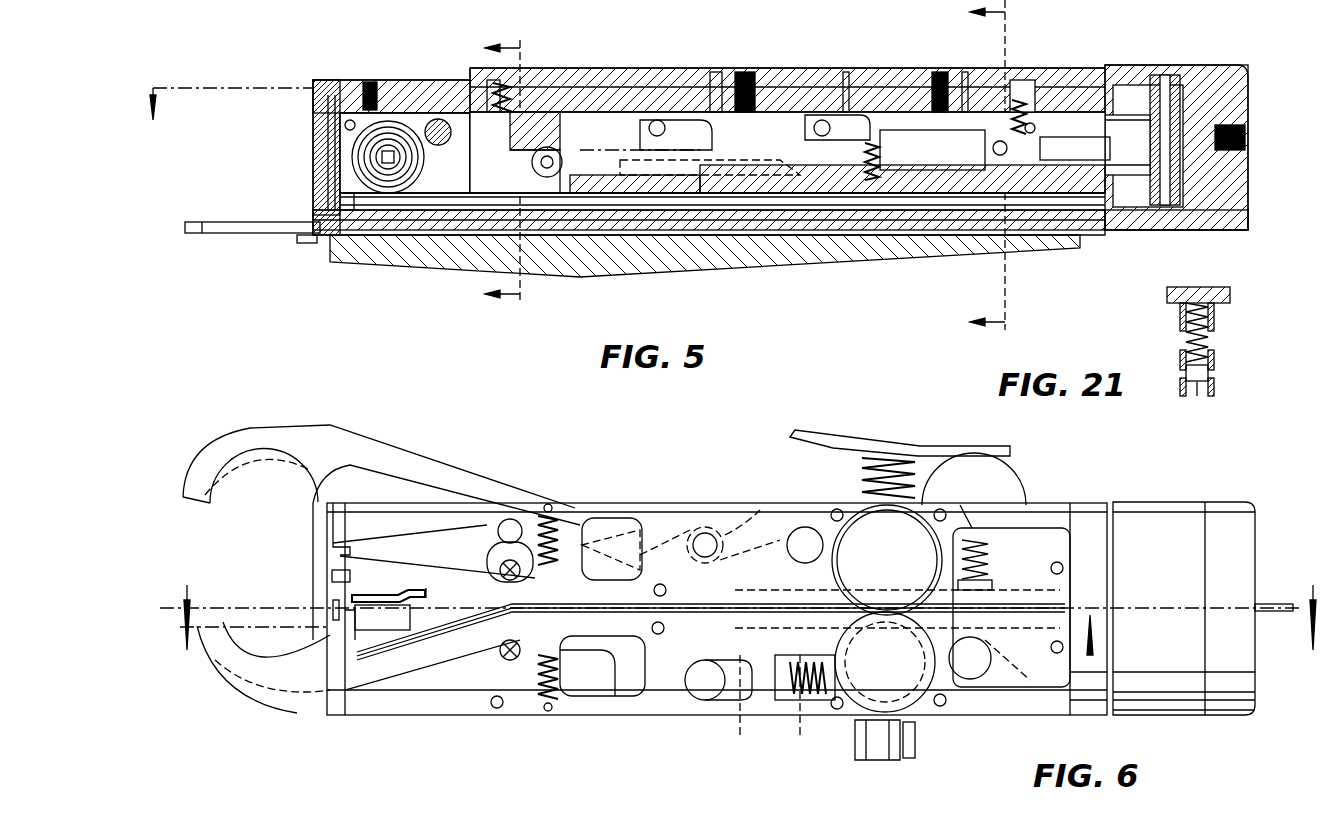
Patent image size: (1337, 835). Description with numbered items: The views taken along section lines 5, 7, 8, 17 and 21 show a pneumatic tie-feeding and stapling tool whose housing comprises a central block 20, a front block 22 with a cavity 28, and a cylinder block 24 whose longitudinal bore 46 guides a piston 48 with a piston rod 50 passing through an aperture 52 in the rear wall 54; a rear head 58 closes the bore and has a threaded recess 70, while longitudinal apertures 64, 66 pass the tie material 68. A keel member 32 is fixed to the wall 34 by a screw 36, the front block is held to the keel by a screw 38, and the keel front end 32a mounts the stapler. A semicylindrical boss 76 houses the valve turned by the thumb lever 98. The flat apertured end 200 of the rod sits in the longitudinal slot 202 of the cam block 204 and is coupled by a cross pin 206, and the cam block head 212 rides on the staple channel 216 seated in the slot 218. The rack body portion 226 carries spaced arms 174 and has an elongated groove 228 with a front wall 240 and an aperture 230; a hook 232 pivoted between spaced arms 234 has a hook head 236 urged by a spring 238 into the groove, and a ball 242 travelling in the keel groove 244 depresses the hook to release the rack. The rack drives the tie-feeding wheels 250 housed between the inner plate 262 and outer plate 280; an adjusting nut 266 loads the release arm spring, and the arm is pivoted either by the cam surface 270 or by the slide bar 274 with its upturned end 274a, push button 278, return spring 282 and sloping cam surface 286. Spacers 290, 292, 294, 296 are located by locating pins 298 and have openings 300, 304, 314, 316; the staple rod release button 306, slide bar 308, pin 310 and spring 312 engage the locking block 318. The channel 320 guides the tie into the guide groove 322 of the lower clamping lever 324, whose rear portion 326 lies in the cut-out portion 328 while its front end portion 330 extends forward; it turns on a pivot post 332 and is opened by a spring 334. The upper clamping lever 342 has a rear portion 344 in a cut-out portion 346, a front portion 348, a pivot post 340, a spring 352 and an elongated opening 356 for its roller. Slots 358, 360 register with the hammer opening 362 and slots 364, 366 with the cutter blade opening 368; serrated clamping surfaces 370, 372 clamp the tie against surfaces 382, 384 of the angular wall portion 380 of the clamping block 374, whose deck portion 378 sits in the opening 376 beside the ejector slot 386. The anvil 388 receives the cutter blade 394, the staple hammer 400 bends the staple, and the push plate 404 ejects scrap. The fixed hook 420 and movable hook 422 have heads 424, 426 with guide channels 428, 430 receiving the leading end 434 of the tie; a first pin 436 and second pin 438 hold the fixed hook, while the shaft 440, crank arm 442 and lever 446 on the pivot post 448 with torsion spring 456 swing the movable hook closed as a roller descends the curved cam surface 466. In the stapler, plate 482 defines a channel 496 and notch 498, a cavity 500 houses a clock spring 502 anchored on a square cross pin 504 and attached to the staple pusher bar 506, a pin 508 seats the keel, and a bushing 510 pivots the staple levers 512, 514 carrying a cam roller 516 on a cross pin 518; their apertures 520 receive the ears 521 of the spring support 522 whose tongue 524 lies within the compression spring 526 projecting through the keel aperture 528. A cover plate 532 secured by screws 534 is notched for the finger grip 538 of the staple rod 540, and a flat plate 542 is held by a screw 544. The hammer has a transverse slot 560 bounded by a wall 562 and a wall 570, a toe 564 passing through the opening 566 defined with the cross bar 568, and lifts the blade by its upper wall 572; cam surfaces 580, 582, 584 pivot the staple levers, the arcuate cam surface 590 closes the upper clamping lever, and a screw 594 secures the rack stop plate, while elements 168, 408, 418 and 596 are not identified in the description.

In FIG. 6, the section line 5 is at (740, 576).
In FIG. 6, the section line 7 is at (639, 657).
In FIG. 5, the section line 8 is at (154, 71).
In FIG. 5, the section line 17 is at (1018, 167).
In FIG. 5, the housing 20 is at (1020, 72).
In FIG. 5, the section line 21 is at (525, 170).
In FIG. 5, the top plate 22 is at (628, 80).
In FIG. 21, the top plate 22 is at (1232, 296).
In FIG. 5, the bolt 24 is at (1184, 75).
In FIG. 5, the roller 28 is at (550, 150).
In FIG. 5, the spring housing 32 is at (672, 80).
In FIG. 21, the spring housing 32 is at (1180, 321).
In FIG. 5, the spring housing 32a is at (390, 80).
In FIG. 5, the pin 34 is at (854, 78).
In FIG. 5, the pin 36 is at (957, 77).
In FIG. 5, the pin 38 is at (716, 72).
In FIG. 5, the bolt 46 is at (1150, 75).
In FIG. 5, the bolt head 48 is at (1178, 70).
In FIG. 5, the end block 50 is at (1115, 160).
In FIG. 5, the block 52 is at (1045, 68).
In FIG. 5, the block 54 is at (1058, 72).
In FIG. 5, the end block 58 is at (1228, 70).
In FIG. 5, the base plate 64 is at (1228, 225).
In FIG. 5, the base plate 66 is at (1140, 222).
In FIG. 6, the rod 68 is at (740, 590).
In FIG. 5, the plug 70 is at (1248, 130).
In FIG. 6, the housing 76 is at (1015, 475).
In FIG. 6, the arm 98 is at (810, 445).
In FIG. 5, the plug thread 168 is at (1248, 148).
In FIG. 5, the pin 174 is at (805, 68).
In FIG. 5, the rod 200 is at (1075, 142).
In FIG. 5, the plate 202 is at (958, 235).
In FIG. 5, the plate 204 is at (915, 230).
In FIG. 5, the plate 206 is at (1015, 235).
In FIG. 5, the spring 212 is at (762, 75).
In FIG. 6, the spring 212 is at (790, 540).
In FIG. 5, the plate 216 is at (782, 225).
In FIG. 5, the plate 218 is at (1060, 232).
In FIG. 5, the spring 226 is at (1020, 80).
In FIG. 5, the pin 228 is at (985, 68).
In FIG. 5, the pin 230 is at (895, 68).
In FIG. 5, the plate 232 is at (878, 230).
In FIG. 5, the pin 234 is at (760, 68).
In FIG. 5, the spring 236 is at (946, 69).
In FIG. 5, the spring 238 is at (893, 161).
In FIG. 5, the pin 240 is at (905, 68).
In FIG. 5, the pin 242 is at (940, 68).
In FIG. 5, the pin 244 is at (840, 68).
In FIG. 6, the cylinder 250 is at (887, 608).
In FIG. 5, the block 262 is at (297, 238).
In FIG. 6, the block 262 is at (690, 520).
In FIG. 6, the nut 266 is at (916, 740).
In FIG. 6, the spring 270 is at (790, 700).
In FIG. 6, the plunger 274 is at (718, 705).
In FIG. 6, the plunger 274a is at (782, 683).
In FIG. 6, the plunger 278 is at (700, 700).
In FIG. 5, the plate 280 is at (312, 240).
In FIG. 6, the spring seat 282 is at (826, 721).
In FIG. 6, the spring seat 286 is at (781, 741).
In FIG. 6, the slide 290 is at (1011, 607).
In FIG. 6, the slide 292 is at (1001, 647).
In FIG. 6, the link 294 is at (716, 571).
In FIG. 6, the link 296 is at (686, 648).
In FIG. 6, the hole 298 is at (822, 601).
In FIG. 6, the roller 300 is at (719, 669).
In FIG. 6, the seat 304 is at (800, 700).
In FIG. 6, the lever 306 is at (985, 690).
In FIG. 6, the lever 308 is at (1010, 690).
In FIG. 6, the spring 310 is at (992, 585).
In FIG. 6, the lever 312 is at (989, 507).
In FIG. 6, the pin 314 is at (1020, 655).
In FIG. 6, the lever 316 is at (984, 512).
In FIG. 5, the plate 318 is at (1050, 235).
In FIG. 6, the plate 318 is at (1060, 590).
In FIG. 5, the lower member 320 is at (628, 262).
In FIG. 6, the lower member 320 is at (676, 612).
In FIG. 6, the rod 322 is at (425, 635).
In FIG. 6, the body 324 is at (465, 715).
In FIG. 6, the cam 326 is at (612, 700).
In FIG. 6, the cam 328 is at (640, 698).
In FIG. 6, the body 330 is at (400, 690).
In FIG. 6, the spring 332 is at (555, 700).
In FIG. 6, the spring 334 is at (558, 703).
In FIG. 6, the spring 340 is at (584, 615).
In FIG. 6, the arm 342 is at (470, 500).
In FIG. 6, the cam 344 is at (612, 528).
In FIG. 6, the cam 346 is at (644, 486).
In FIG. 6, the arm 348 is at (445, 505).
In FIG. 6, the pin 352 is at (548, 504).
In FIG. 6, the cam 356 is at (640, 518).
In FIG. 6, the jaw 358 is at (328, 680).
In FIG. 6, the latch 360 is at (333, 552).
In FIG. 5, the pin 362 is at (320, 236).
In FIG. 6, the pin 362 is at (333, 605).
In FIG. 6, the jaw 364 is at (330, 715).
In FIG. 6, the arm 366 is at (347, 503).
In FIG. 6, the latch 368 is at (333, 620).
In FIG. 6, the body 370 is at (358, 690).
In FIG. 6, the arm 372 is at (365, 545).
In FIG. 5, the link 374 is at (388, 230).
In FIG. 6, the link 374 is at (425, 600).
In FIG. 6, the link 376 is at (428, 590).
In FIG. 6, the lever 378 is at (385, 645).
In FIG. 6, the block 380 is at (387, 615).
In FIG. 6, the block 382 is at (351, 625).
In FIG. 6, the latch 384 is at (332, 575).
In FIG. 6, the link 386 is at (390, 584).
In FIG. 5, the plate 388 is at (328, 240).
In FIG. 5, the plate 394 is at (356, 215).
In FIG. 5, the housing 400 is at (318, 96).
In FIG. 6, the arm 404 is at (370, 558).
In FIG. 6, the boss 408 is at (508, 518).
In FIG. 5, the plate 418 is at (340, 245).
In FIG. 5, the body 420 is at (462, 240).
In FIG. 6, the body 420 is at (430, 700).
In FIG. 6, the upper jaw 422 is at (385, 462).
In FIG. 5, the lower jaw 424 is at (193, 224).
In FIG. 6, the lower jaw 424 is at (240, 680).
In FIG. 6, the hook 426 is at (205, 470).
In FIG. 6, the hook 428 is at (222, 665).
In FIG. 6, the hook 430 is at (258, 445).
In FIG. 6, the body 434 is at (375, 700).
In FIG. 6, the body 436 is at (340, 705).
In FIG. 6, the screw 438 is at (510, 660).
In FIG. 6, the boss 440 is at (510, 518).
In FIG. 6, the spring 442 is at (585, 518).
In FIG. 6, the link 446 is at (768, 488).
In FIG. 6, the link 448 is at (892, 544).
In FIG. 6, the roller 456 is at (710, 511).
In FIG. 6, the cylinder 466 is at (881, 586).
In FIG. 5, the spring 482 is at (425, 85).
In FIG. 5, the plate 496 is at (453, 250).
In FIG. 5, the plate 498 is at (476, 250).
In FIG. 5, the spring 500 is at (400, 125).
In FIG. 5, the spiral spring 502 is at (386, 120).
In FIG. 5, the spring 504 is at (405, 130).
In FIG. 5, the plate 506 is at (950, 230).
In FIG. 5, the pin 508 is at (490, 80).
In FIG. 5, the spring 510 is at (415, 120).
In FIG. 21, the plunger 512 is at (1183, 398).
In FIG. 5, the plunger 514 is at (470, 165).
In FIG. 21, the plunger 514 is at (1214, 391).
In FIG. 5, the block 516 is at (520, 150).
In FIG. 5, the block 518 is at (575, 85).
In FIG. 5, the plate 520 is at (540, 230).
In FIG. 5, the plunger 521 is at (500, 195).
In FIG. 21, the plunger 521 is at (1208, 373).
In FIG. 21, the plunger 522 is at (1200, 398).
In FIG. 21, the plunger 524 is at (1214, 356).
In FIG. 5, the spring 526 is at (510, 90).
In FIG. 21, the spring 526 is at (1210, 341).
In FIG. 21, the spring 528 is at (1214, 321).
In FIG. 5, the wall 532 is at (316, 110).
In FIG. 5, the pin 534 is at (442, 145).
In FIG. 5, the wall 538 is at (325, 191).
In FIG. 5, the plate 540 is at (440, 270).
In FIG. 5, the wall 542 is at (330, 85).
In FIG. 5, the wall 544 is at (340, 82).
In FIG. 5, the wall 560 is at (322, 139).
In FIG. 5, the wall 562 is at (326, 163).
In FIG. 5, the wall 564 is at (330, 179).
In FIG. 5, the wall 566 is at (335, 206).
In FIG. 5, the wall 568 is at (1095, 70).
In FIG. 5, the wall 570 is at (320, 126).
In FIG. 5, the wall 572 is at (325, 151).
In FIG. 5, the link 580 is at (640, 163).
In FIG. 5, the link 582 is at (642, 128).
In FIG. 5, the link 584 is at (710, 170).
In FIG. 6, the roller 590 is at (785, 545).
In FIG. 5, the block 594 is at (943, 150).
In FIG. 5, the pin 596 is at (1049, 130).